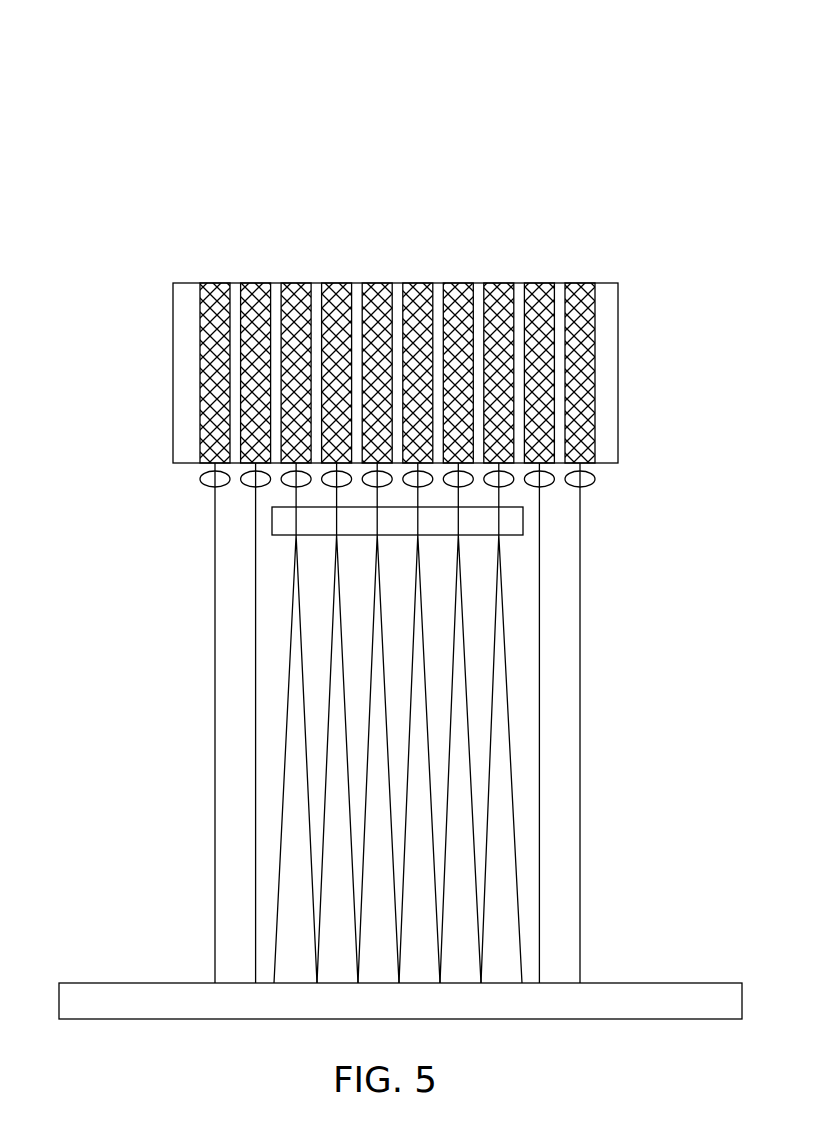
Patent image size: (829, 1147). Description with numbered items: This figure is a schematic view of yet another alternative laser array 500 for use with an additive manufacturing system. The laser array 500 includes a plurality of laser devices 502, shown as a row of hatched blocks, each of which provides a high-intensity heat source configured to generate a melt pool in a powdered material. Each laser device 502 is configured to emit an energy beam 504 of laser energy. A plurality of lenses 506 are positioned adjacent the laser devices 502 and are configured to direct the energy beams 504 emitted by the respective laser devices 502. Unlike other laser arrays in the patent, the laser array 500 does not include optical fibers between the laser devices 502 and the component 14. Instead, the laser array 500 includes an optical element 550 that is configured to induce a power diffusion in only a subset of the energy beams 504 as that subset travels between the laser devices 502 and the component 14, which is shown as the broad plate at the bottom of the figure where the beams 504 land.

The laser array 500 is at (612, 82).
The laser device 502 is at (462, 283).
The lens 506 is at (238, 487).
The energy beam 504 is at (540, 644).
The optical element 550 is at (525, 520).
The component 14 is at (744, 1000).